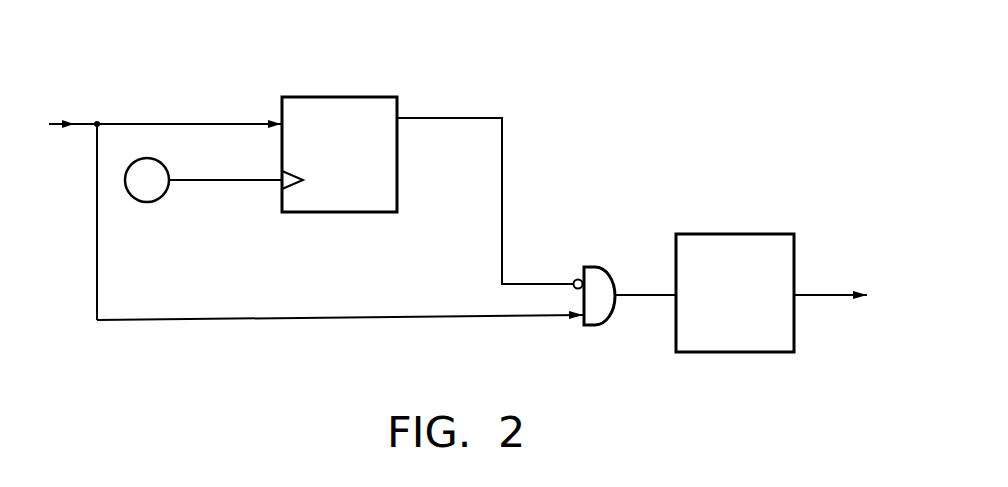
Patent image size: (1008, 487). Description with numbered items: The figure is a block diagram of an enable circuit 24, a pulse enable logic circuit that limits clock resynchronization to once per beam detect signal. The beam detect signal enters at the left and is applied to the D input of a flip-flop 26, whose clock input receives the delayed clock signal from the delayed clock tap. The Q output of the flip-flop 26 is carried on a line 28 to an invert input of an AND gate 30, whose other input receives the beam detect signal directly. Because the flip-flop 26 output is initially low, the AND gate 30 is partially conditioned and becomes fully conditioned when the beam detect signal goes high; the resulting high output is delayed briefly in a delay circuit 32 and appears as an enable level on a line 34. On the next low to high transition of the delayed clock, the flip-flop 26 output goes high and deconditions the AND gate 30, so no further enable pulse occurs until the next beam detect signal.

The enable circuit 24 is at (367, 62).
The flip-flop 26 is at (330, 208).
The line 28 is at (505, 142).
The AND gate 30 is at (595, 268).
The delay circuit 32 is at (755, 233).
The line 34 is at (817, 290).